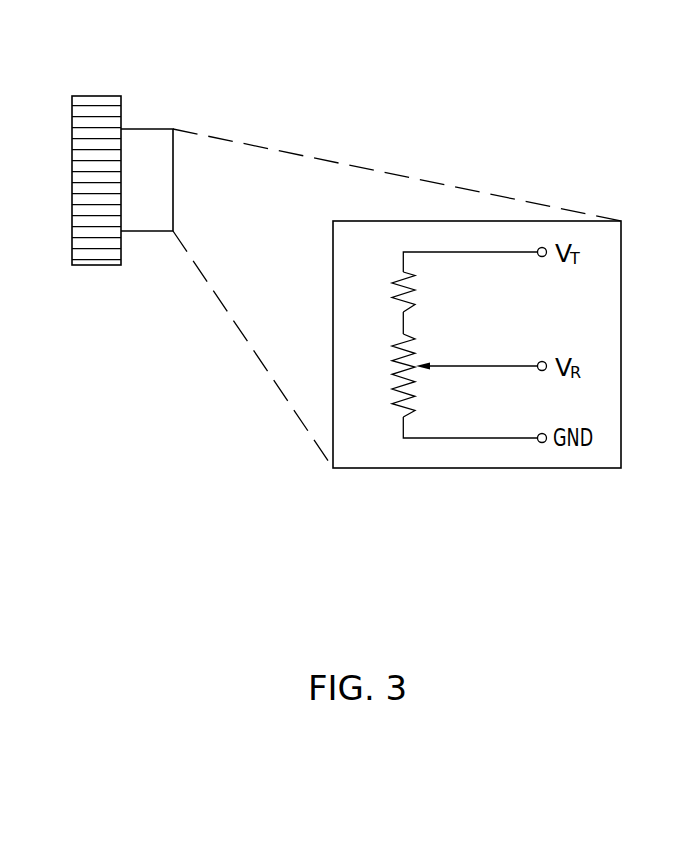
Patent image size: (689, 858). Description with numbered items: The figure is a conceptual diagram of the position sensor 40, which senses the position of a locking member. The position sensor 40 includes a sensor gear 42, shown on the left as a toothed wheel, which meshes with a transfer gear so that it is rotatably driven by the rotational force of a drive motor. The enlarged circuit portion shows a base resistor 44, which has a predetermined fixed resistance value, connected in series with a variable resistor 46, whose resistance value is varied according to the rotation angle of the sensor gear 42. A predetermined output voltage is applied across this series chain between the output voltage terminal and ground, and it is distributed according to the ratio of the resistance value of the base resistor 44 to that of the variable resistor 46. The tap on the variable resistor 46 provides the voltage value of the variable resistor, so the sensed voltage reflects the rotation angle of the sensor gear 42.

The position sensor 40 is at (124, 153).
The sensor gear 42 is at (98, 96).
The base resistor 44 is at (390, 292).
The variable resistor 46 is at (451, 375).